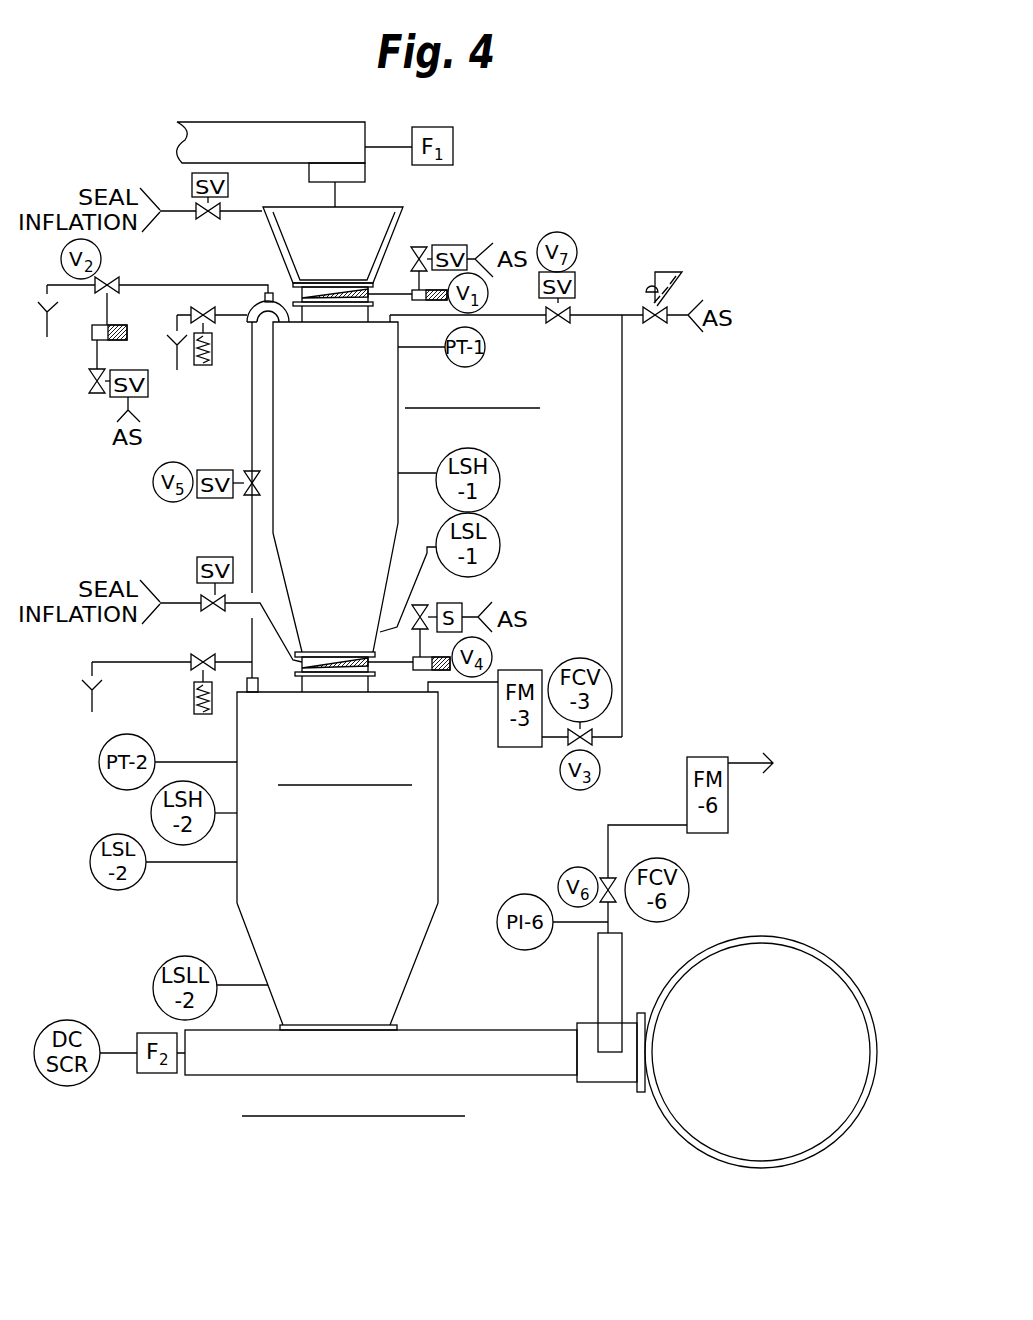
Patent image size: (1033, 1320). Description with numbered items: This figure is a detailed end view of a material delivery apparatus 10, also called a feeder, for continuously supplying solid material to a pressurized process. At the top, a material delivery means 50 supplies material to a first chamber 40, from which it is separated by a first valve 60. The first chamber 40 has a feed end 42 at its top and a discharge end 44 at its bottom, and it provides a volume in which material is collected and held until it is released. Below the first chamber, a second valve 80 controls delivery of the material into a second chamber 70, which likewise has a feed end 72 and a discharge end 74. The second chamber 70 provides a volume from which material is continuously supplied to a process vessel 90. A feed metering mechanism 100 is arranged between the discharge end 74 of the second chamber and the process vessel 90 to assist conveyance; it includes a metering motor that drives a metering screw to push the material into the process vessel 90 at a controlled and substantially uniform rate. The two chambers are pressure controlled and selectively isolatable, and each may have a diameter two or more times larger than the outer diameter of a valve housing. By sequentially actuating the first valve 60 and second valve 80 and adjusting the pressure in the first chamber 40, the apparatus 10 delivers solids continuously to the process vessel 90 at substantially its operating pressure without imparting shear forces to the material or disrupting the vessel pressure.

The material delivery apparatus 10 is at (672, 447).
The first chamber 40 is at (330, 470).
The feed end 42 is at (378, 352).
The discharge end 44 is at (353, 645).
The material delivery means 50 is at (349, 123).
The first valve 60 is at (378, 282).
The second chamber 70 is at (362, 907).
The feed end 72 is at (348, 703).
The discharge end 74 is at (353, 975).
The second valve 80 is at (375, 677).
The process vessel 90 is at (781, 1048).
The feed metering mechanism 100 is at (509, 1062).